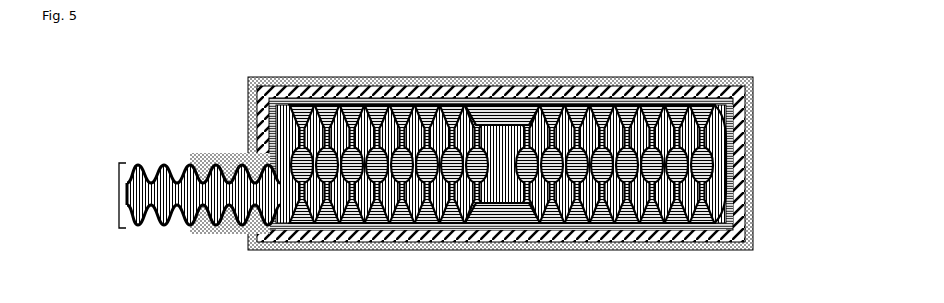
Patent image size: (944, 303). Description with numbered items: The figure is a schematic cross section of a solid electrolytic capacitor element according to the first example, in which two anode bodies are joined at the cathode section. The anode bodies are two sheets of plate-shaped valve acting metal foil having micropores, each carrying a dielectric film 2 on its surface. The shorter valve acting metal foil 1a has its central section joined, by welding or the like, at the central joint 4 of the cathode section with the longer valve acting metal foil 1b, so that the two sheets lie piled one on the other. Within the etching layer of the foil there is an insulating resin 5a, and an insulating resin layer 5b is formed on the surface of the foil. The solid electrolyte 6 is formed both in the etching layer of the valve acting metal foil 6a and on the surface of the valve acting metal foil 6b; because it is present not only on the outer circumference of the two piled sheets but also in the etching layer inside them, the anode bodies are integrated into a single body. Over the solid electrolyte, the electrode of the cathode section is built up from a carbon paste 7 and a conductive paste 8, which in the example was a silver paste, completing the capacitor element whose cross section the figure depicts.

The shorter valve acting metal foil 1a is at (259, 128).
The longer valve acting metal foil 1b is at (112, 190).
The dielectric film 2 is at (137, 160).
The joint 4 is at (502, 117).
The insulating resin 5a is at (228, 233).
The insulating resin layer 5b is at (209, 234).
The solid electrolyte 6 is at (522, 100).
The solid electrolyte in the etching layer of the valve acting metal foil 6a is at (702, 236).
The solid electrolyte on the surface of the valve acting metal foil 6b is at (753, 222).
The carbon paste 7 is at (754, 88).
The conductive paste 8 is at (757, 162).